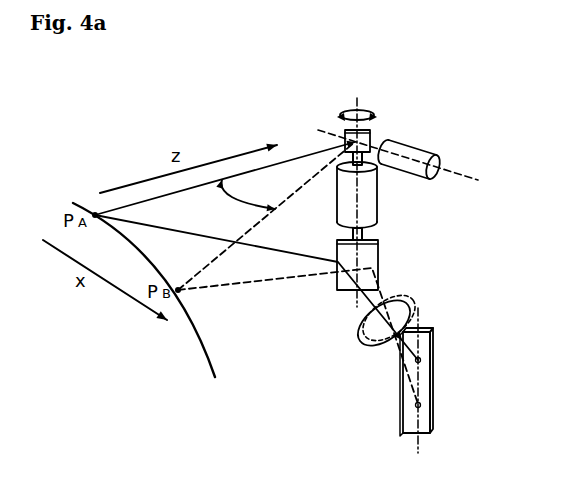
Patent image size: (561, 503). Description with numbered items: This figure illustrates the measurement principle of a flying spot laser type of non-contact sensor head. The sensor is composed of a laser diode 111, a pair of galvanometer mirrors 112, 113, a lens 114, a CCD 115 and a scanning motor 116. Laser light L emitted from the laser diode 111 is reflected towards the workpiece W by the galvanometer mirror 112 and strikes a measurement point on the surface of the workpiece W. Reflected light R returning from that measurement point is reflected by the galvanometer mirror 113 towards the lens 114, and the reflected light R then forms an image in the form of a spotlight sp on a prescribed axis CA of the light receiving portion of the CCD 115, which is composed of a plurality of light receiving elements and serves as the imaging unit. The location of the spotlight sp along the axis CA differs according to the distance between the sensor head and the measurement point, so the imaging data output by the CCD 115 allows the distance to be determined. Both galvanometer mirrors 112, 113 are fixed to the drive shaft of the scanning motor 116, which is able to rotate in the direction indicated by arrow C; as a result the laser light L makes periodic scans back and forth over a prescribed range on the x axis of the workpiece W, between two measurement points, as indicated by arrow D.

The laser diode 111 is at (424, 150).
The galvanometer mirror 112 is at (370, 132).
The galvanometer mirror 113 is at (378, 262).
The lens 114 is at (360, 332).
The CCD 115 is at (433, 405).
The scanning motor 116 is at (377, 200).
The workpiece W is at (207, 353).
The arrow C is at (354, 107).
The axis CA is at (414, 393).
The spotlight sp is at (420, 360).
The laser light L is at (150, 205).
The reflected light R is at (305, 255).
The arrow D is at (241, 197).